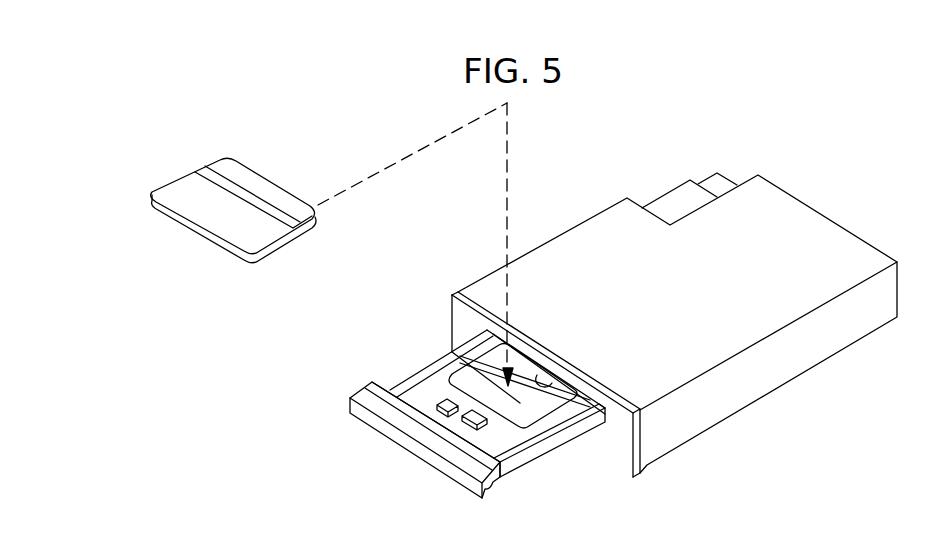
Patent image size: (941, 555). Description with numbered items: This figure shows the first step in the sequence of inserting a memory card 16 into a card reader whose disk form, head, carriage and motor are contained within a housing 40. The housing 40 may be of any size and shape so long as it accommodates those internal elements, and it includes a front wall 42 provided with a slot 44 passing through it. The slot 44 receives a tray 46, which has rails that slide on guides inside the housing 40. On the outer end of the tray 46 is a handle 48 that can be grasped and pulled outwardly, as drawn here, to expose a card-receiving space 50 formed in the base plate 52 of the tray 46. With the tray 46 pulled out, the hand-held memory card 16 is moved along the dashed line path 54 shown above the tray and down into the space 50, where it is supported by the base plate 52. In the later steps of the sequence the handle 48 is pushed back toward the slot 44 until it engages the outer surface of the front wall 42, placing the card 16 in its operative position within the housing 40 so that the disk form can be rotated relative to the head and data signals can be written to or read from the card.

The memory card 16 is at (268, 188).
The housing 40 is at (836, 219).
The front wall 42 is at (617, 453).
The slot 44 is at (587, 402).
The tray 46 is at (536, 456).
The handle 48 is at (413, 448).
The card-receiving space 50 is at (452, 352).
The base plate 52 is at (430, 393).
The dashed line path 54 is at (507, 152).